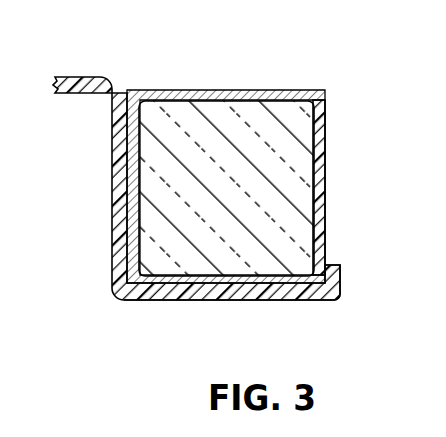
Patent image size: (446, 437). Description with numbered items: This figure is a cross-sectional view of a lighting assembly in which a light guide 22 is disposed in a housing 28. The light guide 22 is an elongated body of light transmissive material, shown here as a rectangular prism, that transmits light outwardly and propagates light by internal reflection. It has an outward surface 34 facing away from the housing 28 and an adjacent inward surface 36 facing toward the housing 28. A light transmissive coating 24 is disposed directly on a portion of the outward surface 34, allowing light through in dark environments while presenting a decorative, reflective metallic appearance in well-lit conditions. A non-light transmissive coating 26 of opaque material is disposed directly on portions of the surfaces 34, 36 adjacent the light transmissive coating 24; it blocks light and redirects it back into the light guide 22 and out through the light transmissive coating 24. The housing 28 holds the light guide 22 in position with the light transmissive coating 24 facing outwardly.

The light guide 22 is at (235, 190).
The light transmissive coating 24 is at (328, 222).
The non-light transmissive coating 26 is at (229, 89).
The housing 28 is at (278, 302).
The outward surface 34 is at (297, 92).
The inward surface 36 is at (128, 262).